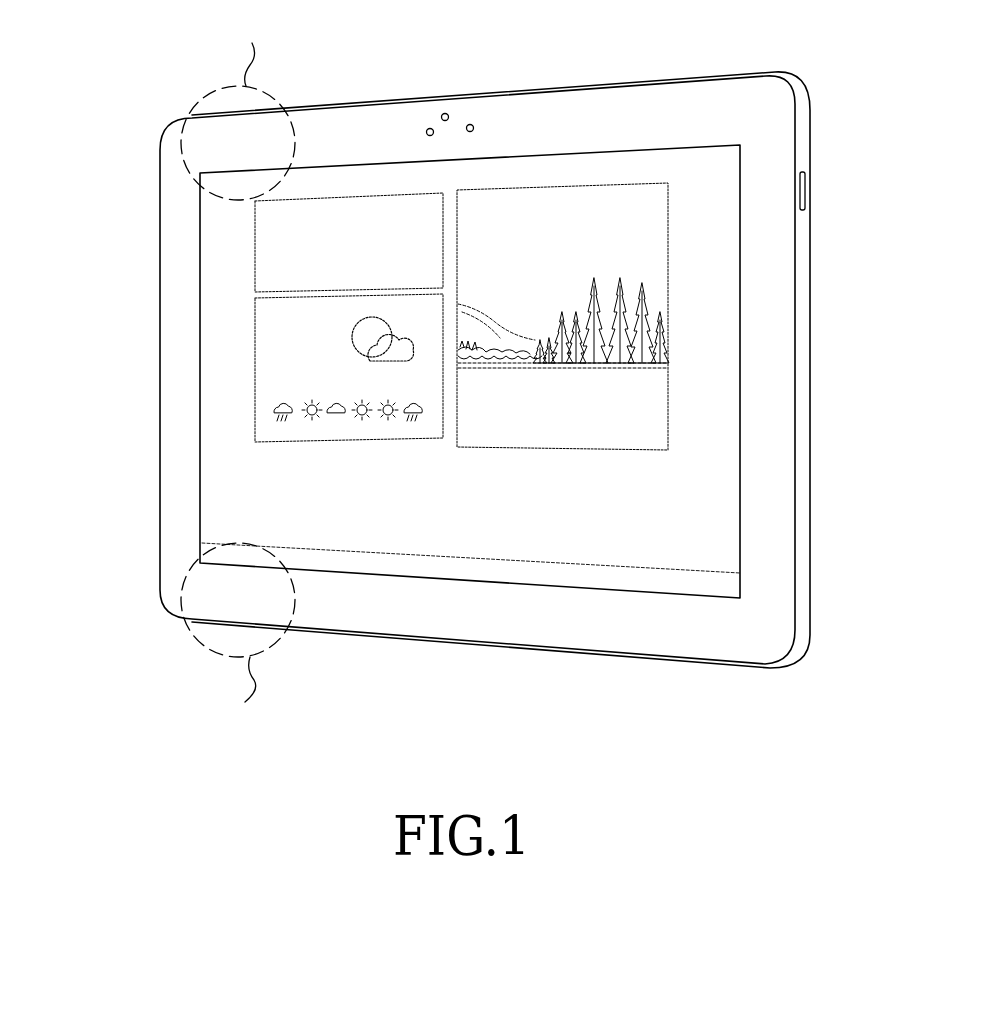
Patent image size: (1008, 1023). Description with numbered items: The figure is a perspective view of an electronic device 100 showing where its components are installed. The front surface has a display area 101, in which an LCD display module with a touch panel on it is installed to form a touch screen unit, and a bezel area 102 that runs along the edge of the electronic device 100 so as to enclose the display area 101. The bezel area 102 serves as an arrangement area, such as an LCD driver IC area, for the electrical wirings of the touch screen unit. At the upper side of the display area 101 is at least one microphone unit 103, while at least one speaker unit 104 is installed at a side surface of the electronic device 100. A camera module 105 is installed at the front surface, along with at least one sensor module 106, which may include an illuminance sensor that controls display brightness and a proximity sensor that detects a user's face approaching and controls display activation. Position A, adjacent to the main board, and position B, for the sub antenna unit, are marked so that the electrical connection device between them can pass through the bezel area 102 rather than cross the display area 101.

The electronic device 100 is at (118, 107).
The display area 101 is at (230, 322).
The bezel area 102 is at (180, 435).
The microphone unit 103 is at (446, 112).
The speaker unit 104 is at (807, 188).
The camera module 105 is at (427, 128).
The sensor module 106 is at (472, 124).